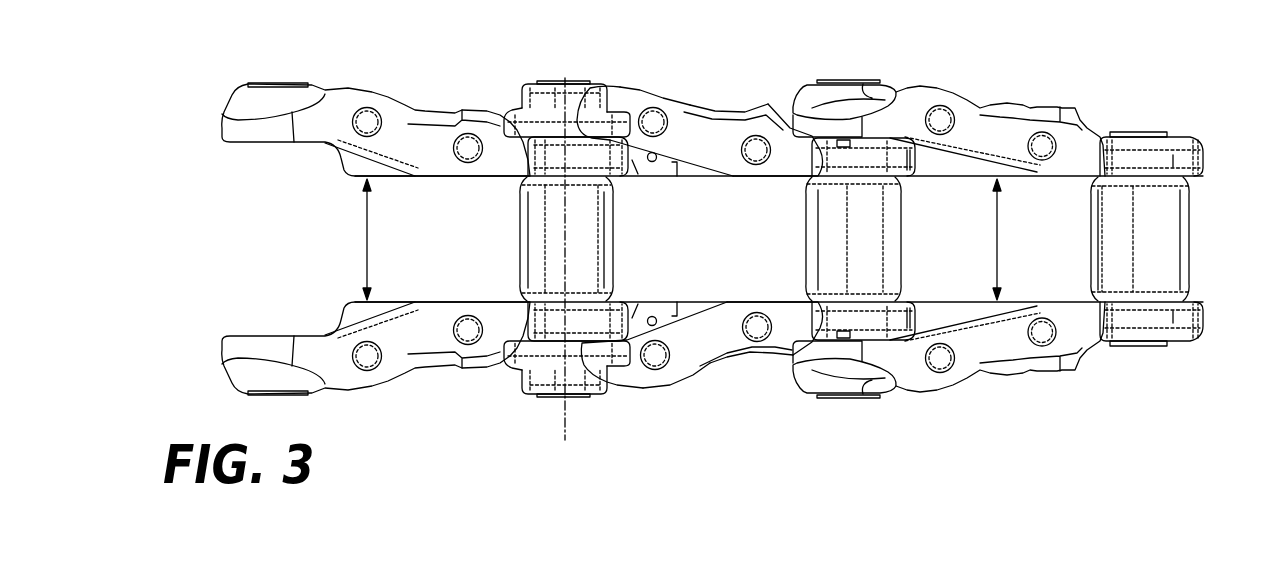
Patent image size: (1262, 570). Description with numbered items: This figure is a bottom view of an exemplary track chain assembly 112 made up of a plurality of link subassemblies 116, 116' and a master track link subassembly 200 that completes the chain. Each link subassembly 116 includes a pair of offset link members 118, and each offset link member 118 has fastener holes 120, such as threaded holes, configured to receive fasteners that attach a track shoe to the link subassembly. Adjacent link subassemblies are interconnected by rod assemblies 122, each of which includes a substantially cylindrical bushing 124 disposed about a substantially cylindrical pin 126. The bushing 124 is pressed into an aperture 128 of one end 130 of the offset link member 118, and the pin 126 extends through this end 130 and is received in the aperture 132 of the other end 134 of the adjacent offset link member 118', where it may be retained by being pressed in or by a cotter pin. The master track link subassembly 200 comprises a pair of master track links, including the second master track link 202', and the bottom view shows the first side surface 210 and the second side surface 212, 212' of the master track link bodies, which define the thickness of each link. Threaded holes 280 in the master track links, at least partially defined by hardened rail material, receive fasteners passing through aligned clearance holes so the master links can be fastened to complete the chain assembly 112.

The chain assembly 112 is at (1141, 105).
The link subassembly 116 is at (337, 239).
The pitch dimension 116' is at (1022, 239).
The offset link member 118 is at (663, 239).
The adjacent offset link member 118' is at (376, 366).
The fastener hole 120 is at (368, 110).
The rod assembly 122 is at (661, 227).
The bushing 124 is at (598, 246).
The pin 126 is at (554, 396).
The aperture 128 is at (522, 181).
The one end 130 is at (610, 180).
The aperture 132 is at (803, 107).
The other end 134 is at (860, 98).
The master track link subassembly 200 is at (706, 102).
The second master track link 202' is at (665, 216).
The first side surface 210 is at (748, 173).
The second side surface 212 is at (733, 98).
The rail 212' is at (778, 402).
The threaded hole 280 is at (652, 110).